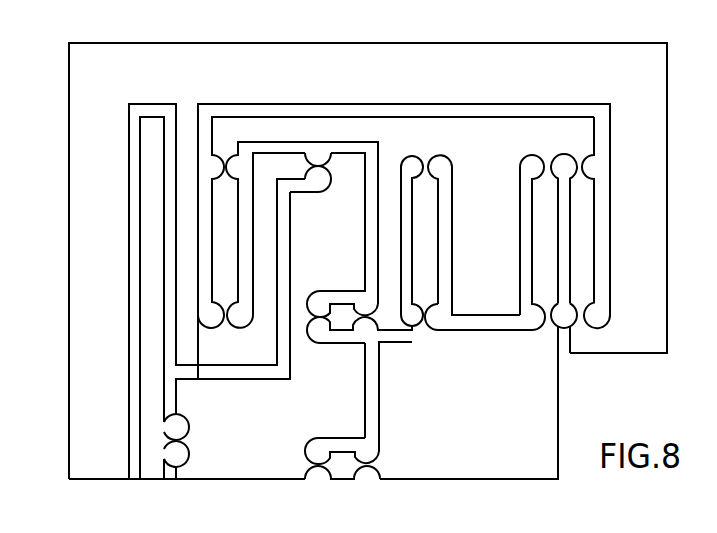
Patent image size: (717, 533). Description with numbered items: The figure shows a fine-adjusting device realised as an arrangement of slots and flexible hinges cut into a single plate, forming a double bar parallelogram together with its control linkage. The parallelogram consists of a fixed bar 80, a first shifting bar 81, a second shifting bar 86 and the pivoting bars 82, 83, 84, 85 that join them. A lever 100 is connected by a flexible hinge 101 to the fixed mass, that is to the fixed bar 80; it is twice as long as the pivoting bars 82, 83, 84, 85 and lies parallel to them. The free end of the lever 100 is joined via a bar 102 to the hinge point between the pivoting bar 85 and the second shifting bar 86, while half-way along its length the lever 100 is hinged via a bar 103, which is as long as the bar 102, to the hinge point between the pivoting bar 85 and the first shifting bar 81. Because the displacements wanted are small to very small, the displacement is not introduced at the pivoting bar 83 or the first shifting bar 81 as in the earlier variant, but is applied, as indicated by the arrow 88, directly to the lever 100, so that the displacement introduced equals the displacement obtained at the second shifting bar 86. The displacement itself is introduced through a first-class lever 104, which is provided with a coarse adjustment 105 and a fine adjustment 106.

The fixed bar 80 is at (112, 65).
The first shifting bar 81 is at (387, 130).
The pivoting bar 82 is at (218, 216).
The pivoting bar 83 is at (582, 202).
The pivoting bar 84 is at (542, 245).
The pivoting bar 85 is at (428, 210).
The second shifting bar 86 is at (508, 469).
The arrow 88 is at (165, 440).
The lever 100 is at (313, 392).
The flexible hinge 101 is at (318, 162).
The bar 102 is at (344, 463).
The bar 103 is at (341, 314).
The first-class lever 104 is at (147, 177).
The coarse adjustment 105 is at (140, 473).
The fine adjustment 106 is at (140, 132).